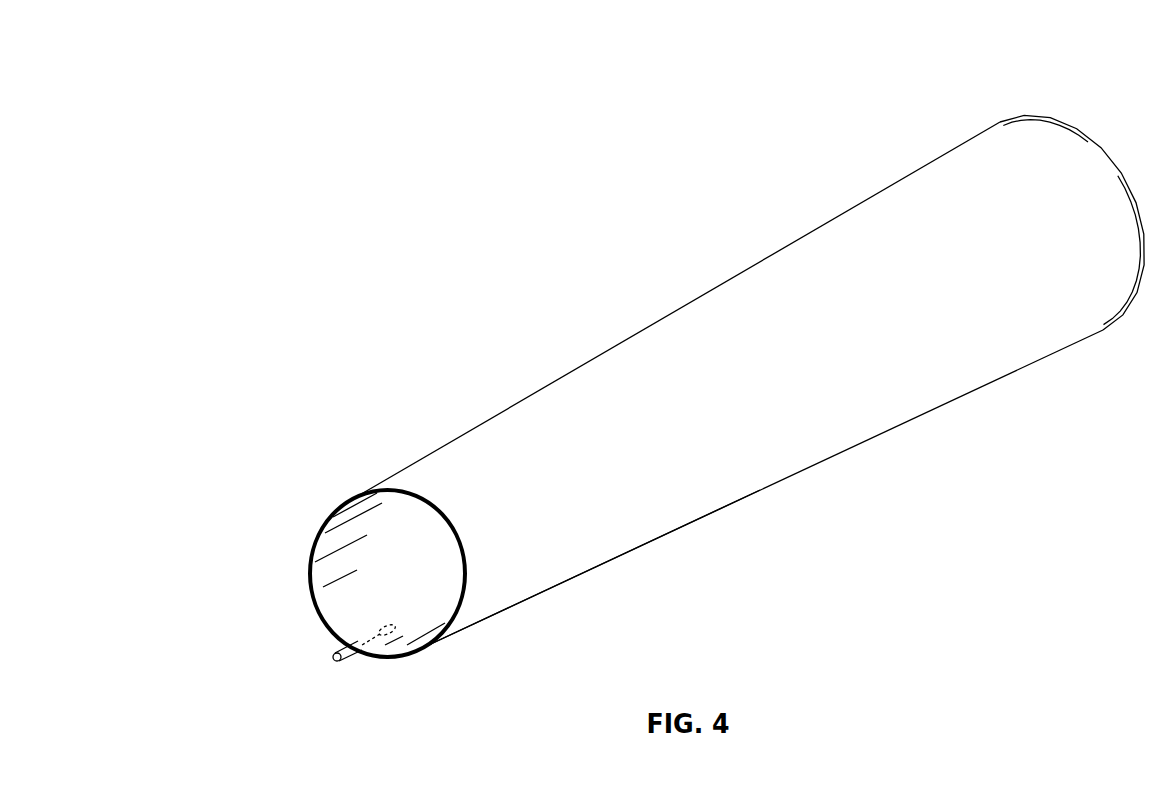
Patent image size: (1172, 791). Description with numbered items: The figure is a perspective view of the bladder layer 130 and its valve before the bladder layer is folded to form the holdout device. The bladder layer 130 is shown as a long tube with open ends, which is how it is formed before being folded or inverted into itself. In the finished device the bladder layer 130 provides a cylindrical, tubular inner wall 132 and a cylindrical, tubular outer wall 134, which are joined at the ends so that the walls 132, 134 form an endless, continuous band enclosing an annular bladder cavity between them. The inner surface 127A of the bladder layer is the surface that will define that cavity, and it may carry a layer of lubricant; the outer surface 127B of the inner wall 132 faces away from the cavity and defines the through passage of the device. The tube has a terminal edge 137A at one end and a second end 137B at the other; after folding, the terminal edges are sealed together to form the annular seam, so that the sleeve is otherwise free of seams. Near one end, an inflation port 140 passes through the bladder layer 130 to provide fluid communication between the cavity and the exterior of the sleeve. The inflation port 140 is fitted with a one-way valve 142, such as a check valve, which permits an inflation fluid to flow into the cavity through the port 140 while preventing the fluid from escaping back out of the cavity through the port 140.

The bladder layer 130 is at (687, 394).
The inner wall 132 is at (940, 373).
The outer wall 134 is at (602, 534).
The inner surface 127A is at (615, 372).
The outer surface 127B is at (328, 548).
The terminal edge 137A is at (342, 500).
The second end 137B is at (1093, 142).
The inflation port 140 is at (376, 628).
The one-way valve 142 is at (340, 657).